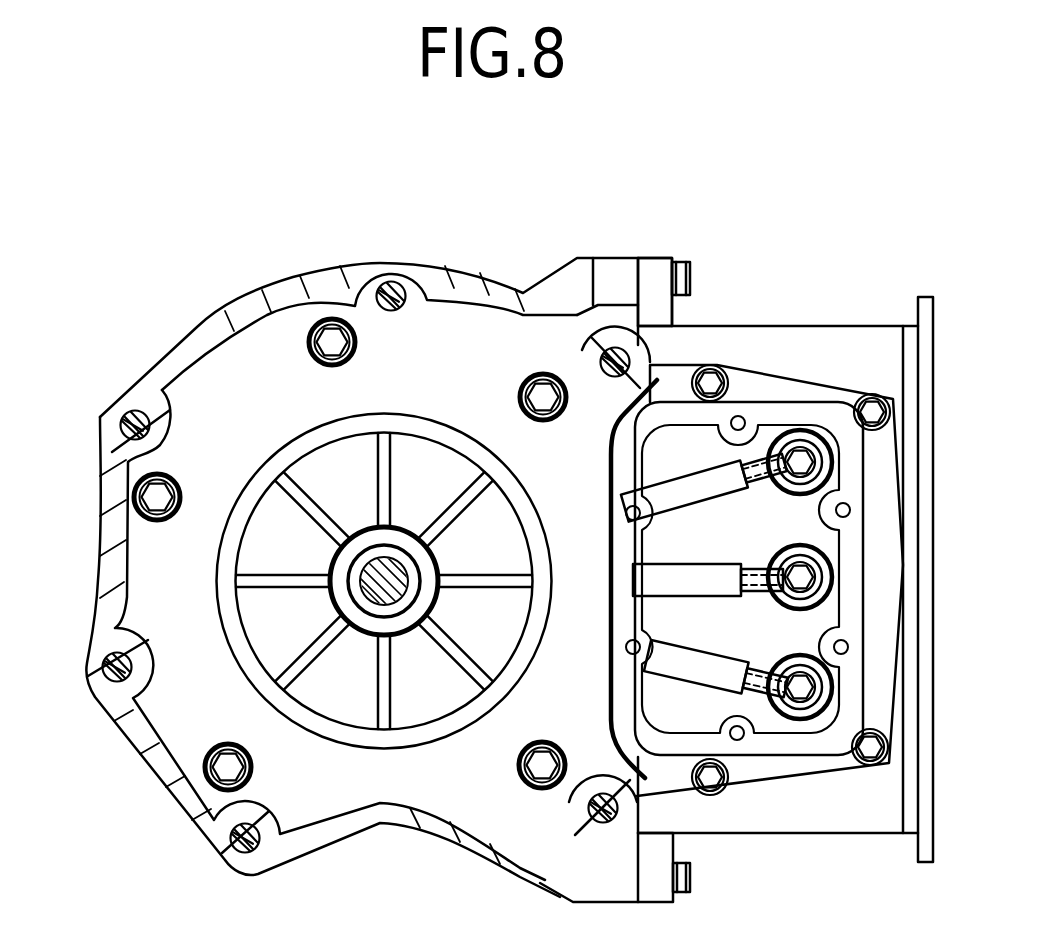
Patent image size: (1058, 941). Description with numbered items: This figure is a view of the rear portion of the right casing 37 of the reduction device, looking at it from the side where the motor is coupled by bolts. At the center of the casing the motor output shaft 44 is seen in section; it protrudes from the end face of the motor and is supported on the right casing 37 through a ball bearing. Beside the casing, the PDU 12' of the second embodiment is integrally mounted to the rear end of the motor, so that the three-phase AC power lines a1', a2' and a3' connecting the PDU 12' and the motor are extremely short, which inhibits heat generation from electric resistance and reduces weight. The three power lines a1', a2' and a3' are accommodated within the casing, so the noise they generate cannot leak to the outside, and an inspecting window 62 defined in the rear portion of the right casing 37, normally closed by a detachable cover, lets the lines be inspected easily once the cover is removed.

The right casing 37 is at (402, 258).
The PDU 12' is at (779, 553).
The motor output shaft 44 is at (402, 582).
The inspecting window 62 is at (650, 700).
The three-phase AC power line a1' is at (726, 476).
The three-phase AC power line a2' is at (732, 563).
The three-phase AC power line a3' is at (738, 663).